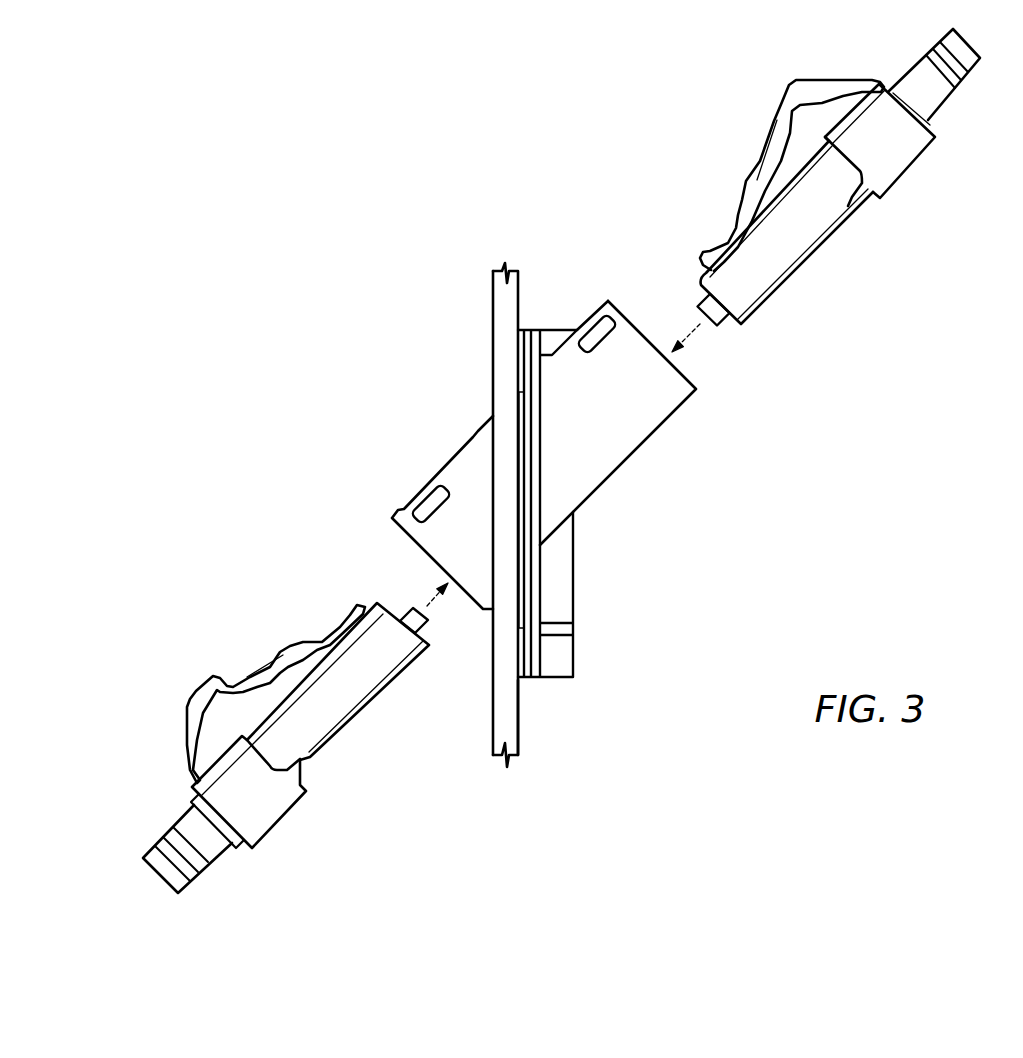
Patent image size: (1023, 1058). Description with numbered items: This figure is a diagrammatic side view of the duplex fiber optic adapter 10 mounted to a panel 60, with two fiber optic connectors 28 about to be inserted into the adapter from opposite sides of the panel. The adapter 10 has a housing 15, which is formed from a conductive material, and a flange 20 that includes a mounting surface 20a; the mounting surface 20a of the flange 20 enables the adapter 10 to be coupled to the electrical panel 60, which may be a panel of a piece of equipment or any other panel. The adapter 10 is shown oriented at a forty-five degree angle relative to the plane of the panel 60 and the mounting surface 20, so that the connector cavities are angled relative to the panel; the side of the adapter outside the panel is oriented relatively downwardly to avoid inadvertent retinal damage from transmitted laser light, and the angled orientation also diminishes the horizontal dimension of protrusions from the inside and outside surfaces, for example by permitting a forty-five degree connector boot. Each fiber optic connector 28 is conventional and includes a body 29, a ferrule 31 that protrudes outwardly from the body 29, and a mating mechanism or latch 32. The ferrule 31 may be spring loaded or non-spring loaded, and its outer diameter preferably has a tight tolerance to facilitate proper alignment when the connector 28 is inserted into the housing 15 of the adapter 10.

The fiber optic adapter 10 is at (563, 489).
The housing 15 is at (648, 450).
The flange 20 is at (519, 318).
The mounting surface 20a is at (492, 302).
The fiber optic connector 28 is at (572, 467).
The body 29 is at (763, 287).
The ferrule 31 is at (722, 322).
The latch 32 is at (771, 155).
The panel 60 is at (519, 715).